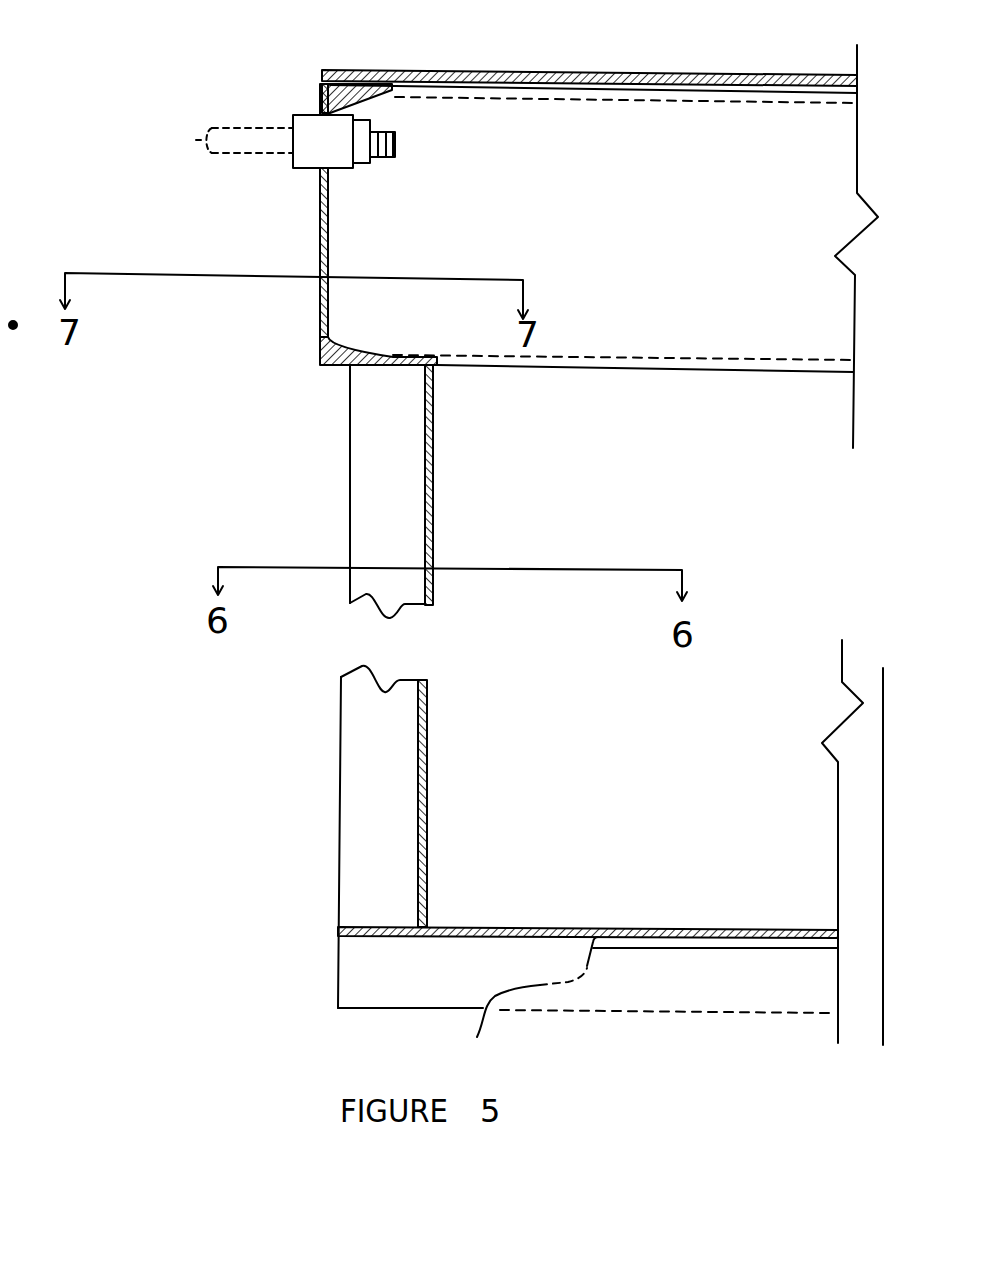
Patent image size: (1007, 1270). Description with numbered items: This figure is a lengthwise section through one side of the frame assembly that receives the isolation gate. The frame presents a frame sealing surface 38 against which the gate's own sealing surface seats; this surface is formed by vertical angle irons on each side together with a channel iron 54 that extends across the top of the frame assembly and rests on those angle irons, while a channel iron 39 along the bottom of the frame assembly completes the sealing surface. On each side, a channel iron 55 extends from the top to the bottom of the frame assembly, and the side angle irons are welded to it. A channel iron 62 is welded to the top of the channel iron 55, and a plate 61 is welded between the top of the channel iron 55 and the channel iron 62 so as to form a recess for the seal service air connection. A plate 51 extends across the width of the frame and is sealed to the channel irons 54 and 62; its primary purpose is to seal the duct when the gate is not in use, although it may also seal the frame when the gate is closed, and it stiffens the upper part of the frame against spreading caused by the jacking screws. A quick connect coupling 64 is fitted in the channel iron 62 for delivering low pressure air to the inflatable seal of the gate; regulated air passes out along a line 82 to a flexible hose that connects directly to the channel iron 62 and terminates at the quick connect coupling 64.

The frame sealing surface 38 is at (472, 927).
The channel iron 39 is at (678, 930).
The plate 51 is at (665, 78).
The channel iron 54 is at (690, 373).
The channel iron 55 is at (433, 515).
The plate 61 is at (400, 357).
The channel iron 62 is at (318, 252).
The quick connect coupling 64 is at (318, 125).
The line 82 is at (230, 128).